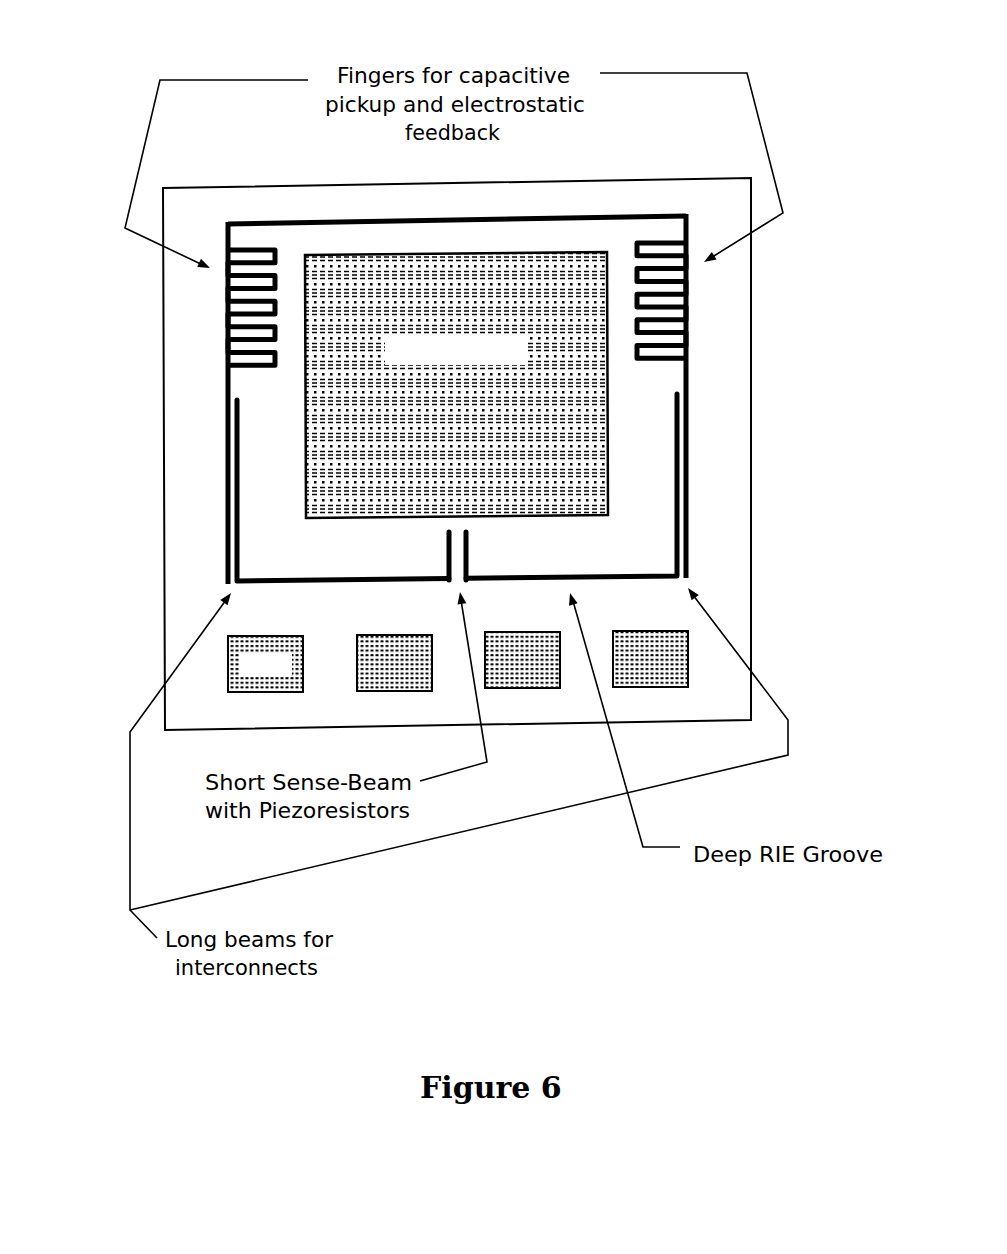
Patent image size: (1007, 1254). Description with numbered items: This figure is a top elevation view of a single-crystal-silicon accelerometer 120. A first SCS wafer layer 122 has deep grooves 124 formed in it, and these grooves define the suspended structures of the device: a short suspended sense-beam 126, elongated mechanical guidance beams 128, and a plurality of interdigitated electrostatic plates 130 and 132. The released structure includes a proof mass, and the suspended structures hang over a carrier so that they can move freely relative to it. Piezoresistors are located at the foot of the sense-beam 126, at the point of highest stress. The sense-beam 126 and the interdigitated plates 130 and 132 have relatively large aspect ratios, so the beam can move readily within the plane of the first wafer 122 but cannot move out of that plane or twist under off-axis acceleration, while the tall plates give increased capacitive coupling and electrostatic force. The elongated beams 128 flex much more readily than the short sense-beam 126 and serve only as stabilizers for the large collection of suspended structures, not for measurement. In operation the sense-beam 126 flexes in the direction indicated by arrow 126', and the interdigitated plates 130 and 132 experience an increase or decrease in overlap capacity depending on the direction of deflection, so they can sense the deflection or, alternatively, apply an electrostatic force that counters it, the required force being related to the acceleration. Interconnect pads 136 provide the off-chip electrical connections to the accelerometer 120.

The accelerometer 120 is at (112, 380).
The first SCS wafer layer 122 is at (742, 556).
The deep grooves 124 is at (608, 214).
The suspended beam 126 is at (494, 556).
The arrow 126' is at (242, 35).
The elongated mechanical guidance beams 128 is at (226, 493).
The interdigitated electrostatic plates 130 is at (204, 303).
The interdigitated electrostatic plates 132 is at (718, 326).
The interconnect pads 136 is at (607, 383).